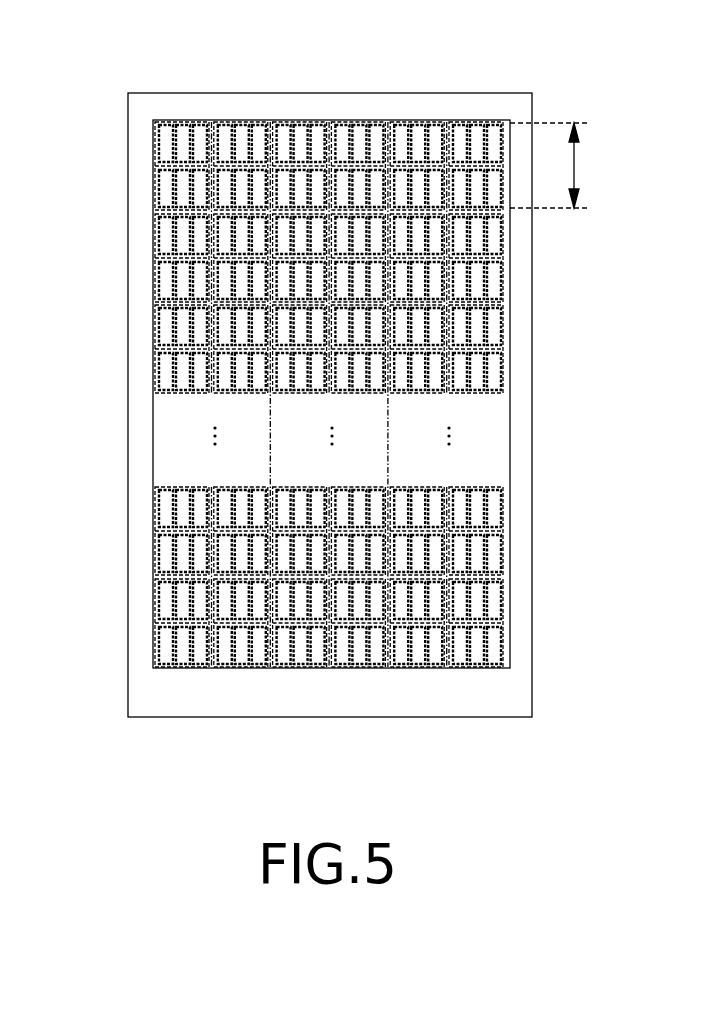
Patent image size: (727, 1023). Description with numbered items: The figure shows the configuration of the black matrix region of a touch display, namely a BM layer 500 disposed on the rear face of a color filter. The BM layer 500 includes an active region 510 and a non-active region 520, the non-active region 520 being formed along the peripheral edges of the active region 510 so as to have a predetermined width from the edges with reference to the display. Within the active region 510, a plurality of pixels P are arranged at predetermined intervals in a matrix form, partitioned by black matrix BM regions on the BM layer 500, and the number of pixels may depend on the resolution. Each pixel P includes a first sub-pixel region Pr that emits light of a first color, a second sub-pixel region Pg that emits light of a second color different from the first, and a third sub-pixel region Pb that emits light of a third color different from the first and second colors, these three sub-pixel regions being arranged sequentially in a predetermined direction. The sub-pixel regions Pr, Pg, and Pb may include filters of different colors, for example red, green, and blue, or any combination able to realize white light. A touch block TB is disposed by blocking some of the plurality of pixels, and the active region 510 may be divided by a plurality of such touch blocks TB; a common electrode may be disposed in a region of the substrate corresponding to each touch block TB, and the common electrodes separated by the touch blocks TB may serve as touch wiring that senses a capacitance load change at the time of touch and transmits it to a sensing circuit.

The BM layer 500 is at (124, 111).
The active region 510 is at (177, 435).
The non-active region 520 is at (520, 284).
The pixel P is at (481, 124).
The first sub-pixel region Pr is at (458, 126).
The second sub-pixel region Pg is at (483, 130).
The third sub-pixel region Pb is at (497, 130).
The black matrix BM is at (471, 122).
The touch block TB is at (549, 165).